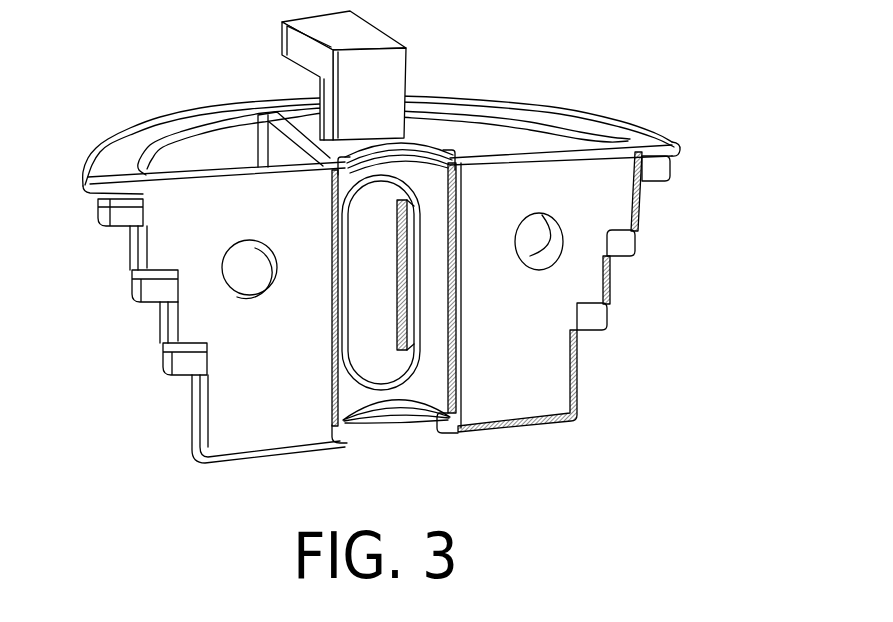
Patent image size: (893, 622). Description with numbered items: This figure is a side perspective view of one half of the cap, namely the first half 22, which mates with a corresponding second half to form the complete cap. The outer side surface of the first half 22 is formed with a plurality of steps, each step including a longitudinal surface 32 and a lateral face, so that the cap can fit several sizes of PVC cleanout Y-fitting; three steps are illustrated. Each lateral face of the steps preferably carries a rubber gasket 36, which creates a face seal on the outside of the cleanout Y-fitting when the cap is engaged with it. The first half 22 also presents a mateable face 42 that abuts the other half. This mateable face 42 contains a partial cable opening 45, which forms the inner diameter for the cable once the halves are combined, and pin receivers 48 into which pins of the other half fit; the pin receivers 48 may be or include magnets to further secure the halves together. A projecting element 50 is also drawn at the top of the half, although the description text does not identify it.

The first half 22 is at (637, 130).
The longitudinal surface 32 is at (607, 282).
The rubber gasket 36 is at (635, 237).
The mateable face 42 is at (547, 382).
The partial cable opening 45 is at (430, 150).
The pin receiver 48 is at (547, 240).
The tab 50 is at (296, 47).